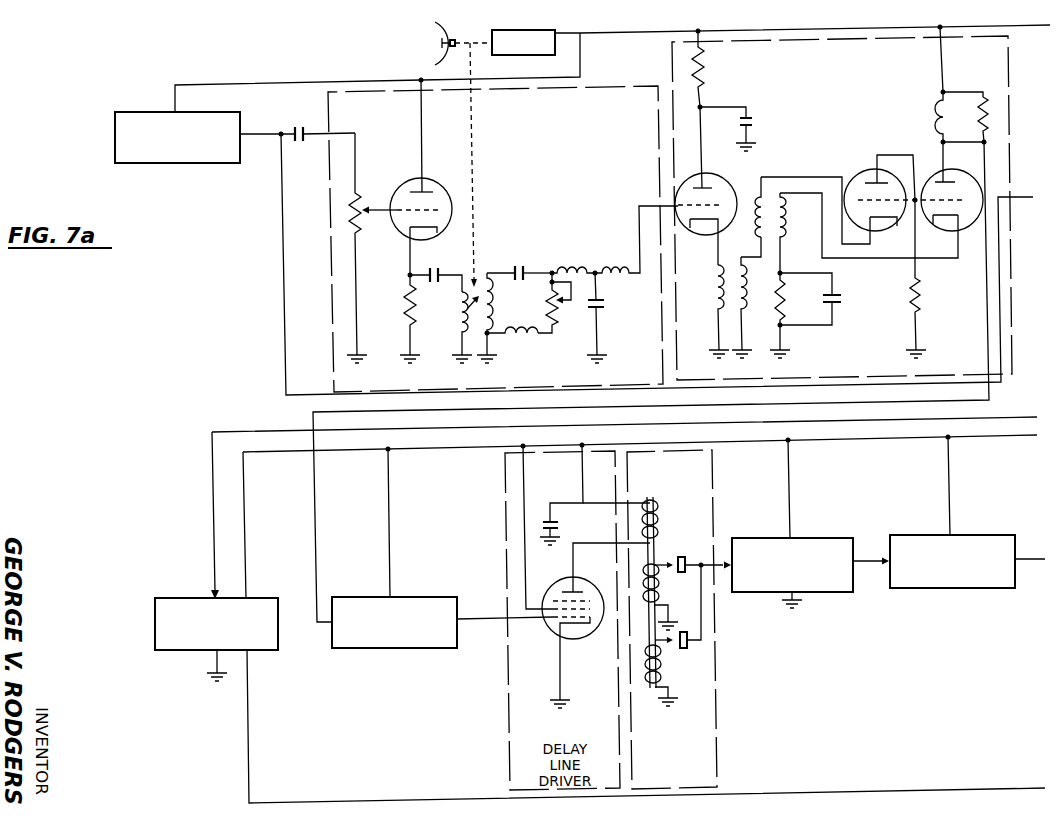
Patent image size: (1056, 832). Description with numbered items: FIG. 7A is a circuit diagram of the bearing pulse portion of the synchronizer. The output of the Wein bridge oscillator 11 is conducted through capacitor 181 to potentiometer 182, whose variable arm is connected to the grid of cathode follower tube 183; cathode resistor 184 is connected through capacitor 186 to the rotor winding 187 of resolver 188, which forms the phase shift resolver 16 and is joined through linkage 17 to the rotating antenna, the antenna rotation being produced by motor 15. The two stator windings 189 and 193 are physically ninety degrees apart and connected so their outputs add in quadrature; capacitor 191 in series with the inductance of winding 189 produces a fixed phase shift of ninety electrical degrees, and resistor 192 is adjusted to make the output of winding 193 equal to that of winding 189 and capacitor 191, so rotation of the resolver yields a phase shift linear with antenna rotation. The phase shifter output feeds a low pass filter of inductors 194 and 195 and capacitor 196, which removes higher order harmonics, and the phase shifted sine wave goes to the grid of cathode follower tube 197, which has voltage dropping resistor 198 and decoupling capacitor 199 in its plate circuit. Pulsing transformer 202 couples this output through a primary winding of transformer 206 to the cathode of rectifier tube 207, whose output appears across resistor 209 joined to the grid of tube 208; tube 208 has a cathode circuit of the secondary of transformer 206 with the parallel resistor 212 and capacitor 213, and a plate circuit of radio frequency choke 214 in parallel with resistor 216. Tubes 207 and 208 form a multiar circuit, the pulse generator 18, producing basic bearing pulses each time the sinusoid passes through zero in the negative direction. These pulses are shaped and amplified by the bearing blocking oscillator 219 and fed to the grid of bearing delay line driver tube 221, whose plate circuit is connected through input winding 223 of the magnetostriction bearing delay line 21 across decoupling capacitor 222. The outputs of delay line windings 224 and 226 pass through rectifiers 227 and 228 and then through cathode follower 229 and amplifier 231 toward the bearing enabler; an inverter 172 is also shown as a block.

The Wein bridge oscillator 11 is at (242, 116).
The motor 15 is at (558, 37).
The phase shift resolver 16 is at (574, 357).
The linkage 17 is at (470, 108).
The pulse generator 18 is at (826, 352).
The delay line 21 is at (682, 733).
The inverter 172 is at (264, 598).
The capacitor 181 is at (298, 125).
The potentiometer 182 is at (358, 198).
The cathode follower tube 183 is at (433, 181).
The cathode resistor 184 is at (408, 298).
The capacitor 186 is at (447, 259).
The rotor winding 187 is at (458, 300).
The resolver 188 is at (503, 259).
The stator winding 189 is at (491, 296).
The capacitor 191 is at (537, 295).
The resistor 192 is at (547, 300).
The stator winding 193 is at (538, 336).
The inductor 194 is at (563, 268).
The inductor 195 is at (614, 268).
The capacitor 196 is at (602, 312).
The cathode follower tube 197 is at (718, 168).
The voltage dropping resistor 198 is at (705, 69).
The decoupling capacitor 199 is at (752, 117).
The pulsing transformer 202 is at (729, 263).
The transformer 206 is at (769, 190).
The rectifier tube 207 is at (860, 178).
The tube 208 is at (965, 165).
The resistor 209 is at (915, 303).
The resistor 212 is at (784, 306).
The capacitor 213 is at (837, 298).
The radio frequency choke 214 is at (936, 119).
The resistor 216 is at (980, 98).
The bearing blocking oscillator 219 is at (443, 597).
The bearing delay line driver tube 221 is at (566, 639).
The decoupling capacitor 222 is at (549, 515).
The input winding 223 is at (657, 518).
The delay line winding 224 is at (657, 593).
The delay line winding 226 is at (659, 668).
The rectifier 227 is at (681, 557).
The rectifier 228 is at (703, 636).
The cathode follower 229 is at (844, 538).
The amplifier 231 is at (994, 535).